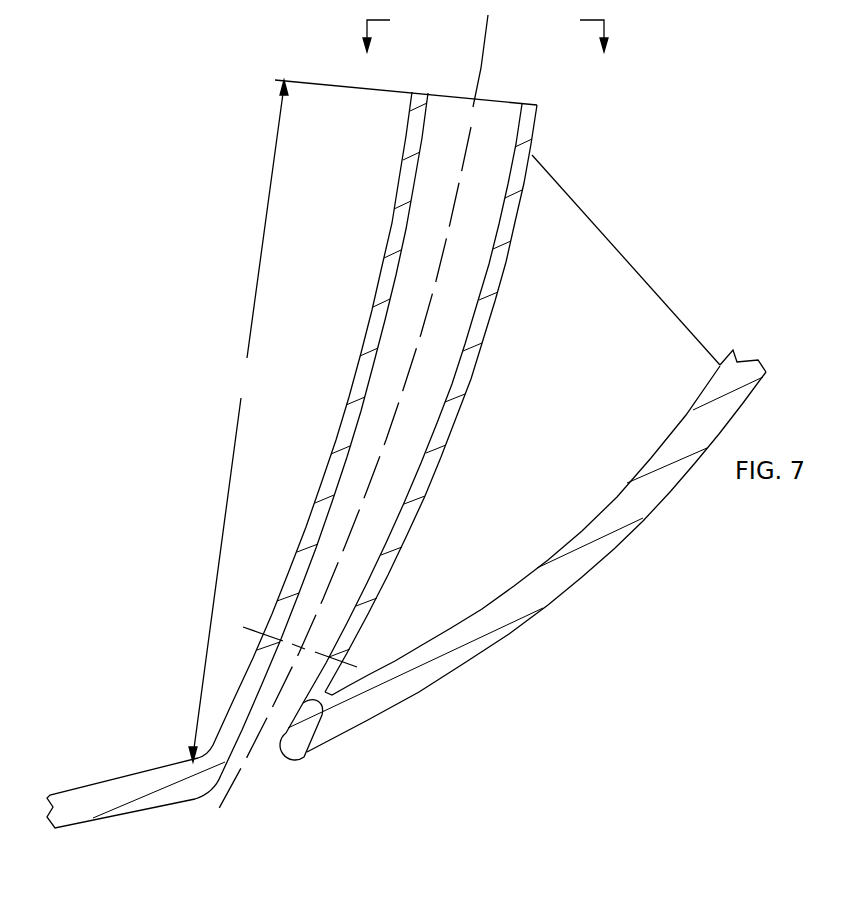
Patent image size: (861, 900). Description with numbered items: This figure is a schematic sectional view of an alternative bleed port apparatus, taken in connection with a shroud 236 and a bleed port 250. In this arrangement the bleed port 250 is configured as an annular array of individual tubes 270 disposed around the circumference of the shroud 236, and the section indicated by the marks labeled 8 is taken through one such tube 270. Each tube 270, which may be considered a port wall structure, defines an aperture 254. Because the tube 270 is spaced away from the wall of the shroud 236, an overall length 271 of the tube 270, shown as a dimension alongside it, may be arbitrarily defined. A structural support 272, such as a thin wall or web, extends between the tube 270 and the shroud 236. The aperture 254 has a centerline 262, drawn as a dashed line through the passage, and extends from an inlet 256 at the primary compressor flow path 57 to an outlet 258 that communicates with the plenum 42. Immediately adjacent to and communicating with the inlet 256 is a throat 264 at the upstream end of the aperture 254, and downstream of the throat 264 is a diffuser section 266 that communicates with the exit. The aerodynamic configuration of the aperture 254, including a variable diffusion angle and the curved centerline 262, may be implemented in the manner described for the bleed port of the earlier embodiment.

The section line 8- 8 is at (482, 39).
The plenum 42 is at (452, 58).
The primary compressor flow path 57 is at (445, 779).
The shroud 236 is at (628, 528).
The bleed port 250 is at (328, 428).
The aperture 254 is at (394, 256).
The inlet 256 is at (212, 802).
The outlet 258 is at (500, 101).
The centerline 262 is at (435, 285).
The throat 264 is at (301, 758).
The diffuser section 266 is at (421, 470).
The tube 270 is at (445, 457).
The overall length 271 is at (238, 421).
The structural support 272 is at (614, 312).